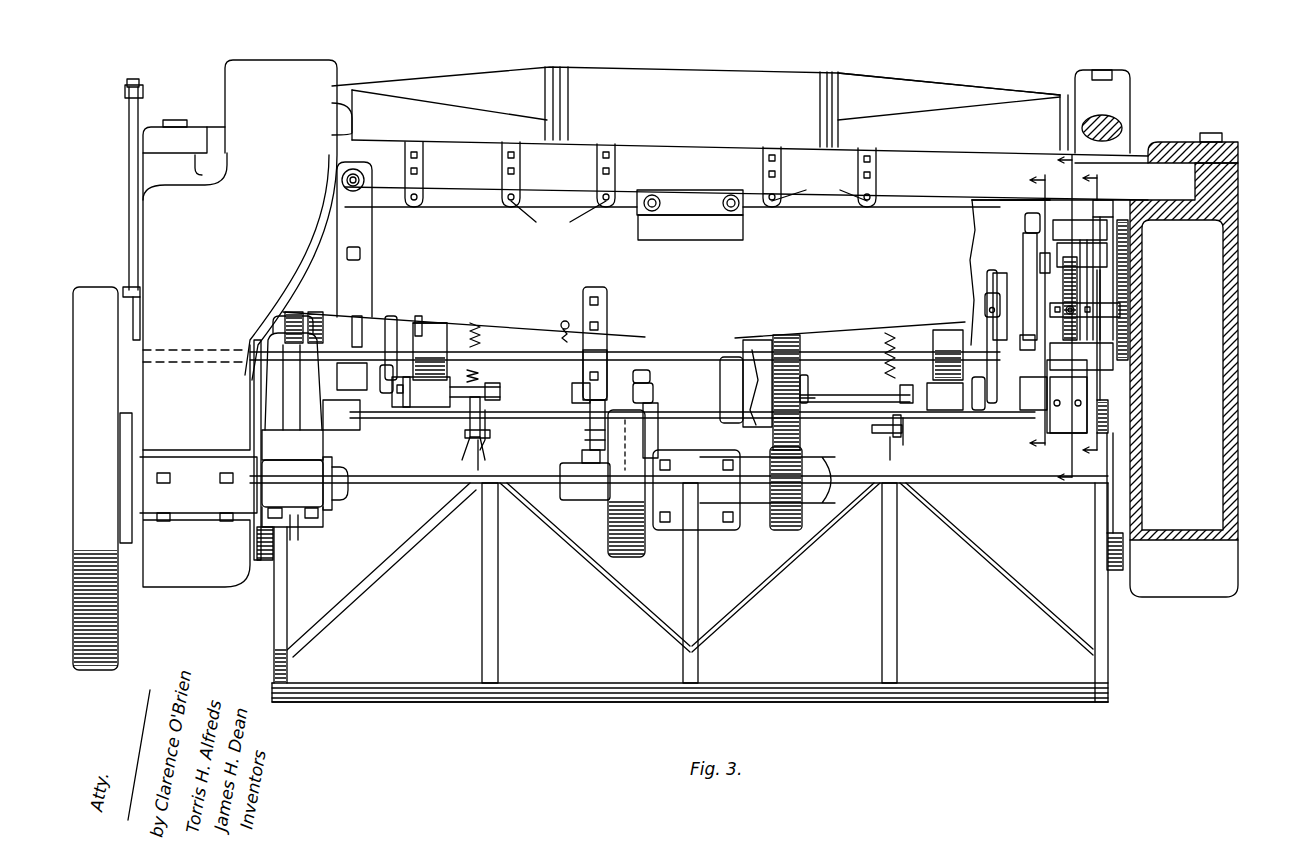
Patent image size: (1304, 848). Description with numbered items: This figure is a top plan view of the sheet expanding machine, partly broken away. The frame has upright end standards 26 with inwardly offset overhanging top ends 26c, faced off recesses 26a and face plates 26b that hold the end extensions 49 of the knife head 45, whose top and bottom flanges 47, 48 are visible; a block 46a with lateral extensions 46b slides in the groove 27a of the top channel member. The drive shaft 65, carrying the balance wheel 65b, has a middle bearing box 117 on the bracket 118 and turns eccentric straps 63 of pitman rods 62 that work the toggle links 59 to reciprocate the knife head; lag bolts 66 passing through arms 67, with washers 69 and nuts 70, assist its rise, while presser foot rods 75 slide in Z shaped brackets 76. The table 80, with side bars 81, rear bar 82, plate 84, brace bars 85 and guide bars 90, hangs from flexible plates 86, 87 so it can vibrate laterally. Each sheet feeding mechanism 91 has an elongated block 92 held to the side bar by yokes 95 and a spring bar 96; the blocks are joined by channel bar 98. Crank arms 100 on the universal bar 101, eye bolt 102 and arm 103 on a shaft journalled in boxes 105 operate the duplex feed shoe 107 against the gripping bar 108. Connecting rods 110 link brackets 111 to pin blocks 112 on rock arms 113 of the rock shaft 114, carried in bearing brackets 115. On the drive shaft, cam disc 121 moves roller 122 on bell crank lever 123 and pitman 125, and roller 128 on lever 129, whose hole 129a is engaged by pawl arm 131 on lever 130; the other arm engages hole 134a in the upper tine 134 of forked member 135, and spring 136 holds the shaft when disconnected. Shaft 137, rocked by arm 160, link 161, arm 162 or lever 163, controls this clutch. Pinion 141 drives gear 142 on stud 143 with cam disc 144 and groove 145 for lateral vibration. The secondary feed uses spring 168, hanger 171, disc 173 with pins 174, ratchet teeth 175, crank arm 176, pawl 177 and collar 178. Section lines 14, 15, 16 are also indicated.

The section line 14 is at (1025, 312).
The section line 15 is at (1065, 318).
The section line 16 is at (1104, 318).
The upright end standard 26 is at (1244, 288).
The faced off recess 26a is at (1202, 185).
The face plate 26b is at (172, 125).
The overhanging top end 26c is at (272, 220).
The vertically disposed groove 27a is at (696, 246).
The knife head 45 is at (937, 96).
The vertically disposed block 46a is at (693, 192).
The lateral extension 46b is at (755, 232).
The top flange 47 is at (740, 217).
The bottom flange 48 is at (612, 68).
The end extension 49 is at (1180, 145).
The coacting link 59 is at (1102, 111).
The pitman rod 62 is at (293, 312).
The eccentric strap 63 is at (292, 436).
The drive shaft 65 is at (699, 488).
The balance wheel 65b is at (102, 478).
The lag bolt 66 is at (343, 175).
The arm 67 is at (372, 232).
The washer 69 is at (347, 183).
The nut 70 is at (348, 188).
The vertical rod 75 is at (689, 202).
The Z shaped bracket 76 is at (502, 176).
The table 80 is at (1122, 679).
The side bar 81 is at (1123, 292).
The rear bar 82 is at (720, 683).
The plate 84 is at (413, 483).
The brace bar 85 is at (497, 627).
The front flexible plate 86 is at (1120, 312).
The rear flexible plate 87 is at (1123, 555).
The guide bar 90 is at (1108, 420).
The sheet feeding mechanism 91 is at (362, 330).
The elongated block 92 is at (1050, 375).
The U shaped yoke 95 is at (1107, 252).
The leaf tension spring bar 96 is at (316, 312).
The inverted channel bar 98 is at (973, 278).
The crank arm 100 is at (1050, 208).
The universal bar 101 is at (391, 318).
The adjustable eye bolt 102 is at (345, 452).
The arm 103 is at (350, 420).
The bearing box 105 is at (273, 328).
The duplex feed shoe 107 is at (1113, 210).
The gripping bar 108 is at (1090, 272).
The connecting rod 110 is at (990, 340).
The bracket 111 is at (993, 290).
The pin block 112 is at (388, 396).
The rock arm 113 is at (405, 405).
The rock shaft 114 is at (822, 392).
The bearing bracket 115 is at (436, 322).
The bearing box 117 is at (696, 490).
The bracket 118 is at (669, 381).
The cam disc 121 is at (626, 483).
The roller 122 is at (629, 446).
The bell crank lever 123 is at (658, 413).
The pitman 125 is at (653, 393).
The roller 128 is at (585, 481).
The lever 129 is at (590, 437).
The hole 129a is at (582, 458).
The lever 130 is at (572, 388).
The pawl arm 131 is at (588, 445).
The upper tine 134 is at (605, 370).
The hole 134a is at (600, 383).
The forked member 135 is at (613, 368).
The coiled spring 136 is at (560, 324).
The shaft 137 is at (447, 320).
The gear pinion 141 is at (802, 440).
The gear 142 is at (795, 345).
The stud 143 is at (812, 385).
The cam disc 144 is at (730, 355).
The peripheral cam groove 145 is at (760, 350).
The arm 160 is at (129, 122).
The link 161 is at (129, 213).
The arm 162 is at (140, 310).
The lever 163 is at (255, 416).
The coiled expansion spring 168 is at (478, 326).
The hanger 171 is at (493, 382).
The disc 173 is at (689, 459).
The pin 174 is at (880, 433).
The ratchet teeth 175 is at (692, 407).
The crank arm 176 is at (482, 427).
The pawl 177 is at (709, 442).
The collar 178 is at (468, 428).